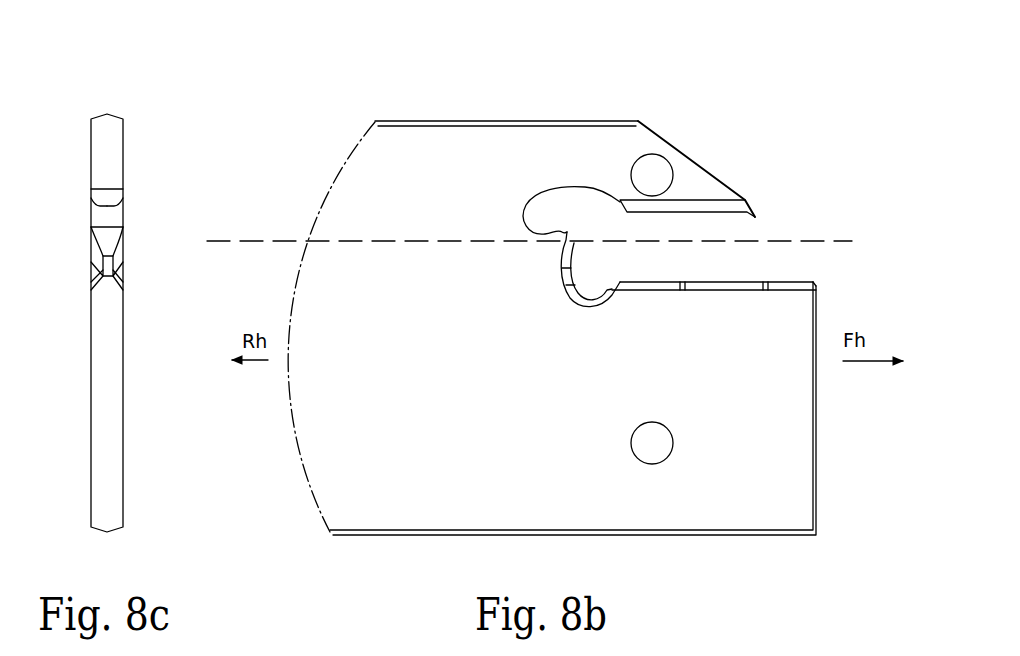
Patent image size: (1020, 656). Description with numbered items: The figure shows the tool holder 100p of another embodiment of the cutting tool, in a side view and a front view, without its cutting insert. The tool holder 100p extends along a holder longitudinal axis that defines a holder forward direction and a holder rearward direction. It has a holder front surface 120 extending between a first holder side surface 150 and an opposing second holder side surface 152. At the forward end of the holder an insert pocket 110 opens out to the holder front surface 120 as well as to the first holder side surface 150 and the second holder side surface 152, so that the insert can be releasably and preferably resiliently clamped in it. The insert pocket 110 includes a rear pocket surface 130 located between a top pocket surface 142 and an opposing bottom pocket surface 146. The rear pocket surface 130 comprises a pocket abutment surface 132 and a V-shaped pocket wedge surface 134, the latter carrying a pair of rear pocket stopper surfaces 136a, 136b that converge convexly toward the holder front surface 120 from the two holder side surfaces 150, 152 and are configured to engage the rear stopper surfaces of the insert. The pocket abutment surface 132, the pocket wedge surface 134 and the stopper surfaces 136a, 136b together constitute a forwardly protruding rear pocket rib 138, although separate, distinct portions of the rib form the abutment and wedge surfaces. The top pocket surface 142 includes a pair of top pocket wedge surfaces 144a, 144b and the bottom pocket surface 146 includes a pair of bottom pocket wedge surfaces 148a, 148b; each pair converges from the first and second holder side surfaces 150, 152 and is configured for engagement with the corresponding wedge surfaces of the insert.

In FIG. 8c, the tool holder 100p is at (141, 87).
In FIG. 8b, the tool holder 100p is at (656, 91).
In FIG. 8b, the insert pocket 110 is at (811, 187).
In FIG. 8c, the holder front surface 120 is at (110, 509).
In FIG. 8b, the holder front surface 120 is at (815, 475).
In FIG. 8b, the rear pocket surface 130 is at (606, 213).
In FIG. 8c, the pocket abutment surface 132 is at (112, 242).
In FIG. 8b, the pocket wedge surface 134 is at (546, 282).
In FIG. 8c, the first rear pocket stopper surface 136a is at (115, 273).
In FIG. 8c, the second rear pocket stopper surface 136b is at (97, 262).
In FIG. 8b, the rear pocket rib 138 is at (558, 224).
In FIG. 8b, the top pocket surface 142 is at (761, 221).
In FIG. 8c, the first top pocket wedge surface 144a is at (123, 203).
In FIG. 8c, the second top pocket wedge surface 144b is at (91, 208).
In FIG. 8b, the bottom pocket surface 146 is at (804, 272).
In FIG. 8c, the first bottom pocket wedge surface 148a is at (124, 275).
In FIG. 8c, the second bottom pocket wedge surface 148b is at (88, 272).
In FIG. 8c, the first holder side surface 150 is at (123, 463).
In FIG. 8c, the second holder side surface 152 is at (91, 496).
In FIG. 8b, the second holder side surface 152 is at (767, 507).